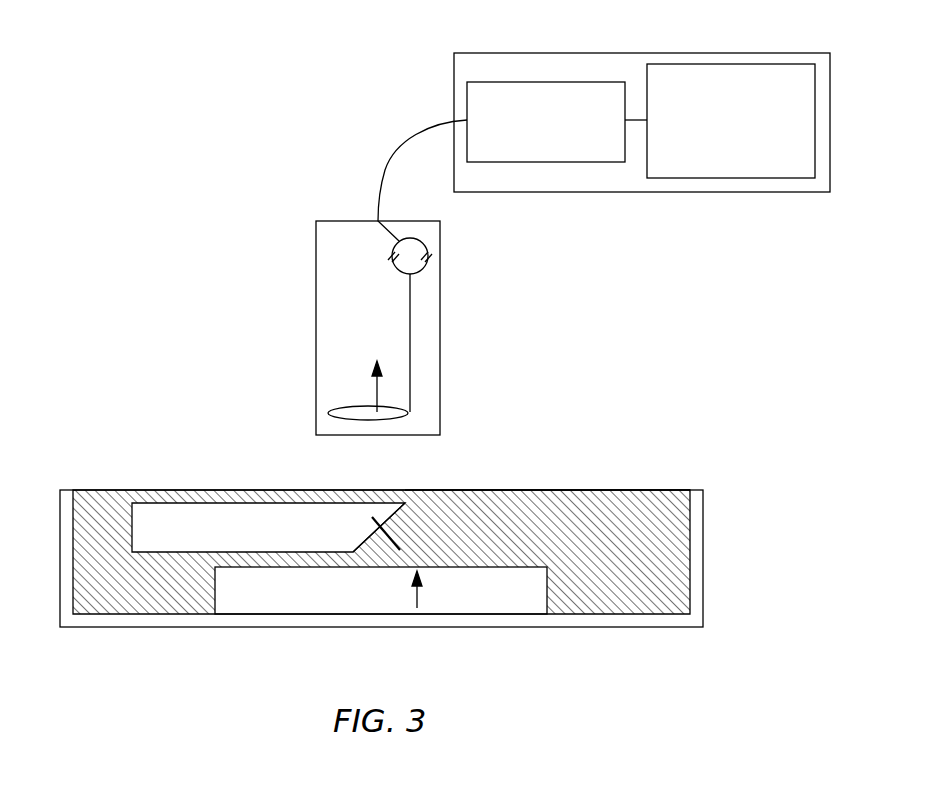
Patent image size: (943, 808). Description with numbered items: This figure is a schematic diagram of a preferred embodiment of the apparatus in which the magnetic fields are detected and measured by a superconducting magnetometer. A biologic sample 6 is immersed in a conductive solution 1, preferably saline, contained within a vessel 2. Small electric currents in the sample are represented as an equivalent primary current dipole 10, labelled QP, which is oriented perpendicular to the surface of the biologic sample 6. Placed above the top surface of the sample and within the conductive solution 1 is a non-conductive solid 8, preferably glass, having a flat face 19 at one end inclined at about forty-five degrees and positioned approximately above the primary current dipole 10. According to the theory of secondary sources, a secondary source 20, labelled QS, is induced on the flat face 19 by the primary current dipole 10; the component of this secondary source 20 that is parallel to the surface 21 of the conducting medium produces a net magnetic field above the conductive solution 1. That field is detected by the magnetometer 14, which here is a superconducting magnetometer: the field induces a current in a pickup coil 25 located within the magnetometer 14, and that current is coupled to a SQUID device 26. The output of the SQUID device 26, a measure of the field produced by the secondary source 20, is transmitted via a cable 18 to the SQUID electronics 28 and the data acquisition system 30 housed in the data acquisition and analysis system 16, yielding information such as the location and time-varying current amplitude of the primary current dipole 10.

The conductive solution 1 is at (573, 605).
The vessel 2 is at (703, 558).
The biologic sample 6 is at (263, 608).
The non-conductive solid 8 is at (181, 510).
The primary current dipole 10 is at (425, 602).
The magnetometer 14 is at (440, 328).
The data acquisition and analysis system 16 is at (665, 53).
The cable 18 is at (420, 133).
The flat face 19 is at (353, 548).
The secondary source 20 is at (407, 512).
The surface of conducting medium 21 is at (577, 490).
The pickup coil 25 is at (357, 405).
The SQUID device 26 is at (422, 240).
The SQUID electronics 28 is at (555, 82).
The data acquisition system 30 is at (737, 64).